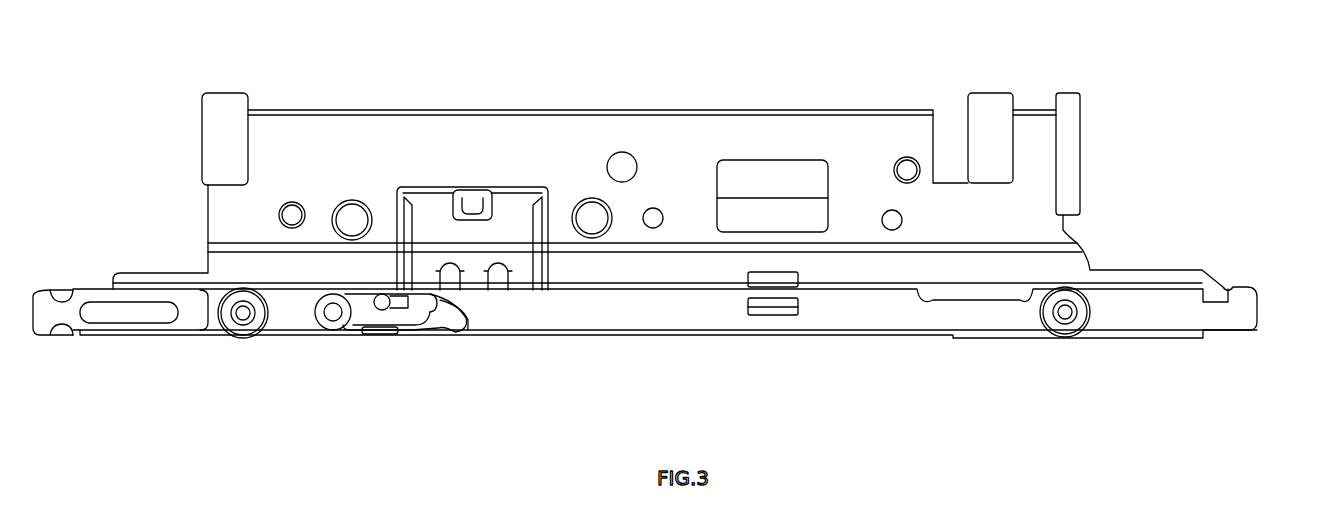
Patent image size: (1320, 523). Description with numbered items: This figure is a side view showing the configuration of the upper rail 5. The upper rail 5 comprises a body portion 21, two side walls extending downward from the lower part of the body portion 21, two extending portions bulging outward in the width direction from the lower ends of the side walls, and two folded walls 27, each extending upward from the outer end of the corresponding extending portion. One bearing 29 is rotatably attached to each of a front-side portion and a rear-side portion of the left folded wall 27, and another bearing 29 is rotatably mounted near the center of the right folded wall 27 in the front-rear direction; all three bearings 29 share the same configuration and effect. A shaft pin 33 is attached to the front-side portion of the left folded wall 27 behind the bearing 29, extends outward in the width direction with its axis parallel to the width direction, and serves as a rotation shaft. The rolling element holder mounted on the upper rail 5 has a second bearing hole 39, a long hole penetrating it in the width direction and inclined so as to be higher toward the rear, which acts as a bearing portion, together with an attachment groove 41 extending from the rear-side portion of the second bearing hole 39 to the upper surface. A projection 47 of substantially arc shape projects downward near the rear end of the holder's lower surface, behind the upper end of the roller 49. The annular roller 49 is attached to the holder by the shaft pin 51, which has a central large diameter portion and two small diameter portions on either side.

The upper rail 5 is at (1278, 138).
The body portion 21 is at (797, 135).
The folded wall 27 is at (495, 320).
The bearing 29 is at (265, 333).
The shaft pin 33 is at (333, 318).
The second bearing hole 39 is at (418, 327).
The attachment groove 41 is at (376, 338).
The projection 47 is at (457, 328).
The roller 49 is at (382, 294).
The shaft pin 51 is at (400, 293).